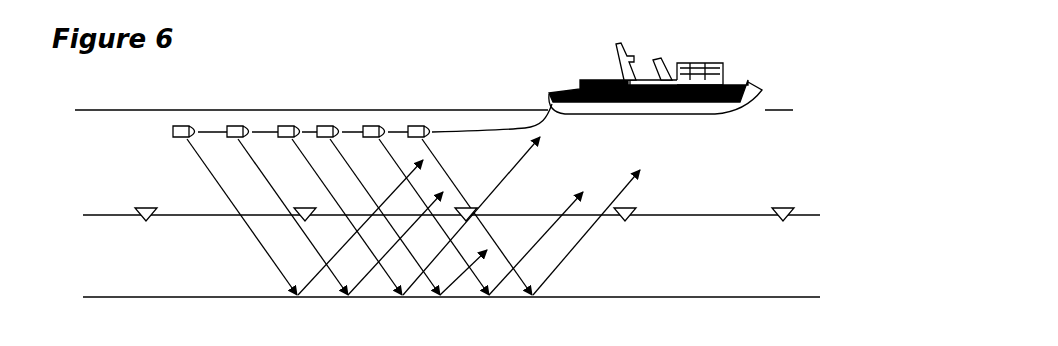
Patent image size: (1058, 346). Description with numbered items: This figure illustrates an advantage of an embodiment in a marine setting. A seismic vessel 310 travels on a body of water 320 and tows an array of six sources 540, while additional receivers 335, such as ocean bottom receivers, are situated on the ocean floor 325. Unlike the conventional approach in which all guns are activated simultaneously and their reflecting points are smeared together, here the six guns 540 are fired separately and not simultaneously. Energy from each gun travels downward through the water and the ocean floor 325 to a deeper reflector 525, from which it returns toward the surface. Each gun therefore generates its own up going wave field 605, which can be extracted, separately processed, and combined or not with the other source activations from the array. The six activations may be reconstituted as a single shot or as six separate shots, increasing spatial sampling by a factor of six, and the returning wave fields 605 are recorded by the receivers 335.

The seismic vessel 310 is at (728, 63).
The body of water 320 is at (108, 110).
The ocean floor 325 is at (90, 215).
The additional receivers 335 is at (148, 222).
The subsurface reflector 525 is at (88, 297).
The sources 540 is at (328, 120).
The up going wave field 605 is at (542, 139).